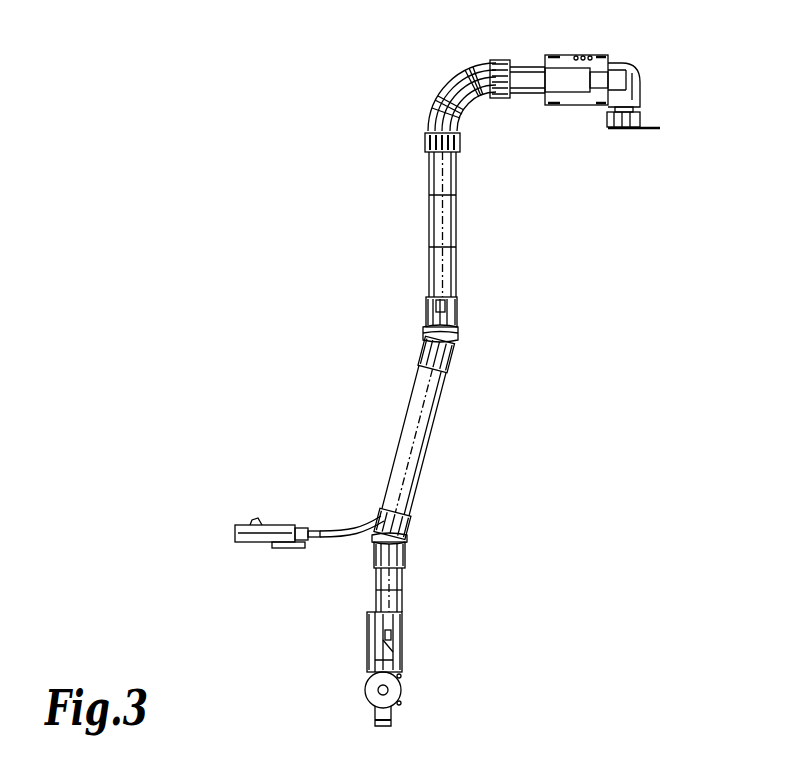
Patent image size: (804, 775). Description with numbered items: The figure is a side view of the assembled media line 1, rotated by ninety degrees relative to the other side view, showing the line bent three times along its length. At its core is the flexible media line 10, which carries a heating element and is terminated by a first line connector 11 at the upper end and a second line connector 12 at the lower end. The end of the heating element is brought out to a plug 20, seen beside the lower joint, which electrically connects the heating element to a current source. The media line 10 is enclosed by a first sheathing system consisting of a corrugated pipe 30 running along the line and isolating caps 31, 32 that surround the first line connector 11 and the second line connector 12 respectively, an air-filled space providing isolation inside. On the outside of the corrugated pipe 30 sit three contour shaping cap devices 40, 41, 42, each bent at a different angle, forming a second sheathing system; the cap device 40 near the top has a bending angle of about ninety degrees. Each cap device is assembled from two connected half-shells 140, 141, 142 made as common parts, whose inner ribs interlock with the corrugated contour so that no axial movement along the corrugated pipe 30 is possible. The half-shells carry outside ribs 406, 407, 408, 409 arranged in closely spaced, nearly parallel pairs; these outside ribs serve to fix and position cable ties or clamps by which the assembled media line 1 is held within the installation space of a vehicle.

The assembled media line 1 is at (576, 430).
The media line 10 is at (452, 228).
The first line connector 11 is at (566, 76).
The second line connector 12 is at (378, 640).
The plug 20 is at (244, 524).
The corrugated pipe 30 is at (433, 238).
The isolating cap 31 is at (581, 105).
The isolating cap 32 is at (372, 665).
The contour shaping cap device 40 is at (427, 138).
The contour shaping cap device 41 is at (420, 320).
The contour shaping cap device 42 is at (416, 525).
The half-shell 140 is at (442, 84).
The half-shell 141 is at (423, 348).
The half-shell 142 is at (377, 555).
The outside rib 406 is at (443, 108).
The outside rib 407 is at (458, 112).
The outside rib 408 is at (490, 63).
The outside rib 409 is at (470, 72).